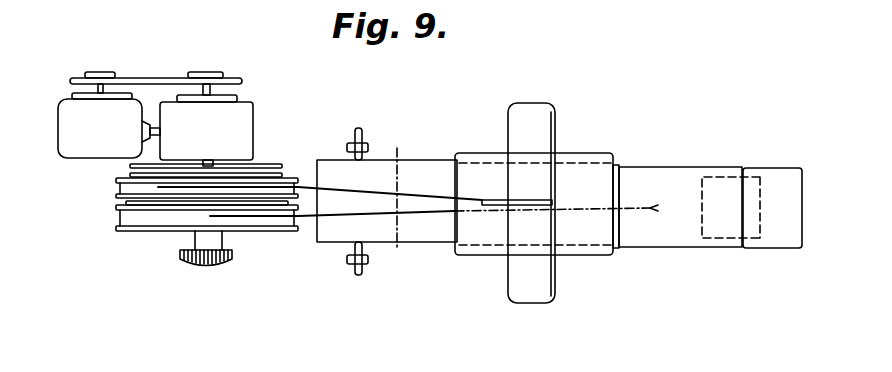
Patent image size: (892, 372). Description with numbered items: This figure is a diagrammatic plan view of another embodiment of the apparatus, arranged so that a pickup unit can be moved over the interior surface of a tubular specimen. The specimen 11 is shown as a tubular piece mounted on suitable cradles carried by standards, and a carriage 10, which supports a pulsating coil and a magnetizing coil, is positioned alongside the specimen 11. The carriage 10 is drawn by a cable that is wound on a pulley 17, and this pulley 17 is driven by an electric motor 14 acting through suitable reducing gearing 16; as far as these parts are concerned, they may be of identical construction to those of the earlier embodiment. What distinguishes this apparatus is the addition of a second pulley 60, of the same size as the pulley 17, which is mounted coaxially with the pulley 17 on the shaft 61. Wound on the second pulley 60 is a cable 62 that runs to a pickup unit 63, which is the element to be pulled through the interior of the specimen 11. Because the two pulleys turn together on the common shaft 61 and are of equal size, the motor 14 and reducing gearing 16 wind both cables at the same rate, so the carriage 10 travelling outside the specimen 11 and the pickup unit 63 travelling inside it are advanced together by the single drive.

The carriage 10 is at (582, 172).
The specimen 11 is at (673, 178).
The electric motor 14 is at (113, 115).
The reducing gearing 16 is at (243, 118).
The pulley 17 is at (118, 188).
The second pulley 60 is at (130, 219).
The shaft 61 is at (217, 160).
The cable 62 is at (372, 193).
The pickup unit 63 is at (728, 198).